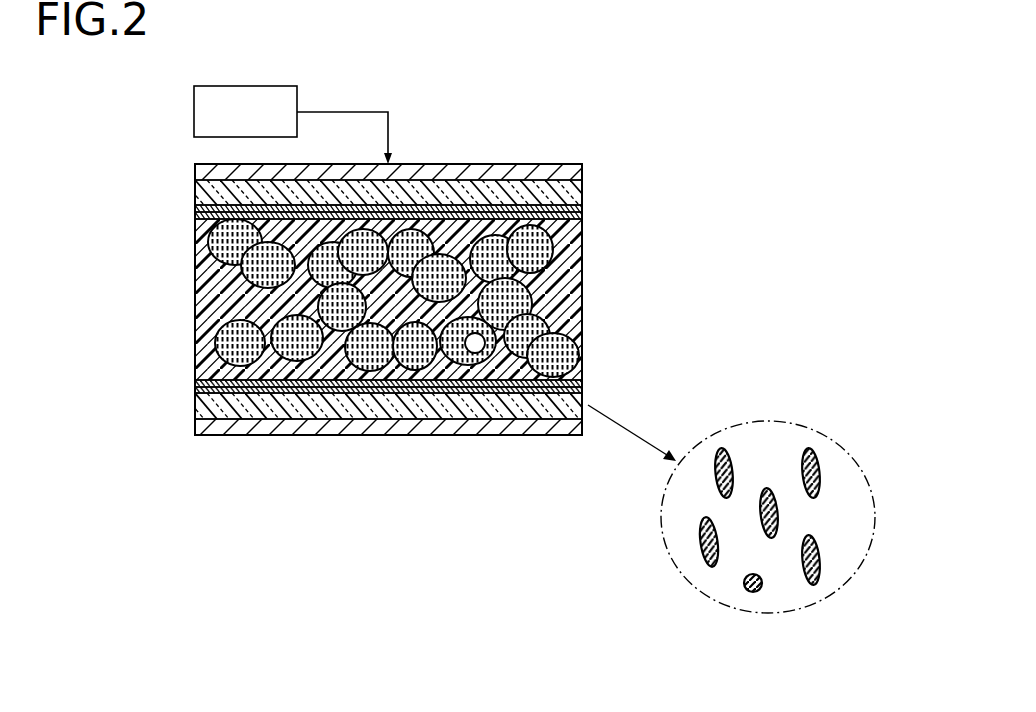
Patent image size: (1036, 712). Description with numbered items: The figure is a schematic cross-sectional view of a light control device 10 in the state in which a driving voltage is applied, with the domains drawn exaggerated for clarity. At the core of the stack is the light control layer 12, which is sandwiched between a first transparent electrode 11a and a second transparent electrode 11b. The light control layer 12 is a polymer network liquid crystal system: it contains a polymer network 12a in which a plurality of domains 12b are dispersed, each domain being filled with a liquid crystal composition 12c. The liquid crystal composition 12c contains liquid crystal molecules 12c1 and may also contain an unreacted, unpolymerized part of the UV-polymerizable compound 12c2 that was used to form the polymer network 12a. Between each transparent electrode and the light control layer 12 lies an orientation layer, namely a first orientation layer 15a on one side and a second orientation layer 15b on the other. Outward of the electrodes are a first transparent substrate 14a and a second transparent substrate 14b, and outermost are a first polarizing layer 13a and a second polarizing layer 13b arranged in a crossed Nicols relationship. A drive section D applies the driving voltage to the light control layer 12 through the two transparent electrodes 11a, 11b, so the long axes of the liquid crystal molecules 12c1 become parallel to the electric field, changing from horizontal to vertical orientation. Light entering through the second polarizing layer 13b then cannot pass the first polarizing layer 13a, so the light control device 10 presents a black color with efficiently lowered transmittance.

The light control device 10 is at (704, 154).
The drive section D is at (194, 112).
The first transparent electrode 11a is at (195, 208).
The second transparent electrode 11b is at (195, 390).
The light control layer 12 is at (513, 436).
The polymer network 12a is at (584, 285).
The domains 12b is at (393, 298).
The liquid crystal composition 12c is at (198, 336).
The liquid crystal molecules 12c1 is at (700, 548).
The UV-polymerizable compound 12c2 is at (753, 592).
The first polarizing layer 13a is at (195, 171).
The second polarizing layer 13b is at (195, 426).
The first transparent substrate 14a is at (582, 192).
The second transparent substrate 14b is at (582, 402).
The first orientation layer 15a is at (582, 215).
The second orientation layer 15b is at (582, 385).